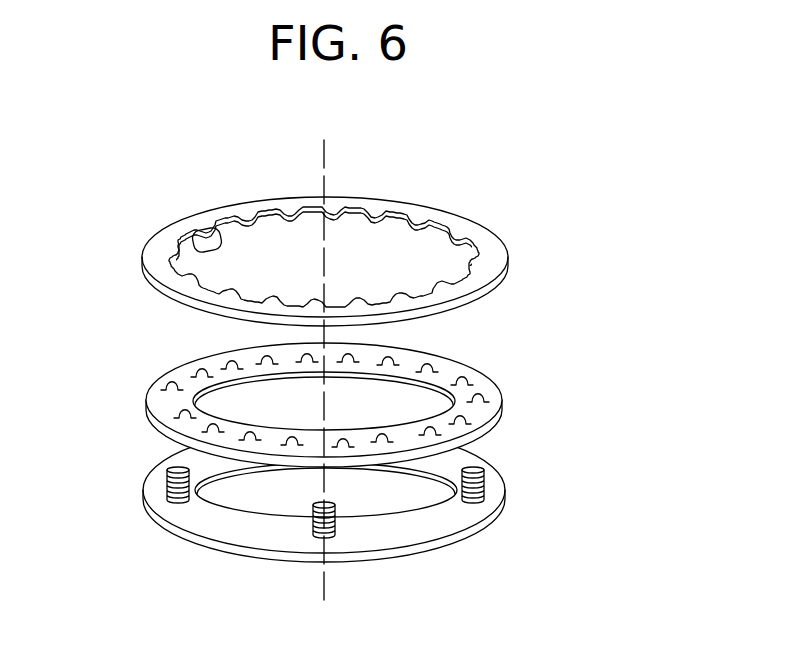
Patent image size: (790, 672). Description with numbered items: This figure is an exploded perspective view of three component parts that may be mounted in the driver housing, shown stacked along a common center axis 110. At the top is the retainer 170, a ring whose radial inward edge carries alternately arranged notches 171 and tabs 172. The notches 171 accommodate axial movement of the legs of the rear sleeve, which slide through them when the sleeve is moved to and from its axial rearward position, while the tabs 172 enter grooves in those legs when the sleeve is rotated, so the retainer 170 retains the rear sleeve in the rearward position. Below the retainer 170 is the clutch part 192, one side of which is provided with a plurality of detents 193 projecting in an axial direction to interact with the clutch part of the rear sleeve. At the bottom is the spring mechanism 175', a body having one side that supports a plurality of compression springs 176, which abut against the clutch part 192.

The central axis 110 is at (325, 152).
The retainer 170 is at (493, 238).
The notches 171 is at (283, 212).
The tabs 172 is at (188, 248).
The clutch part 192 is at (503, 390).
The detents 193 is at (433, 372).
The spring mechanism 175' is at (378, 491).
The compression springs 176 is at (337, 500).